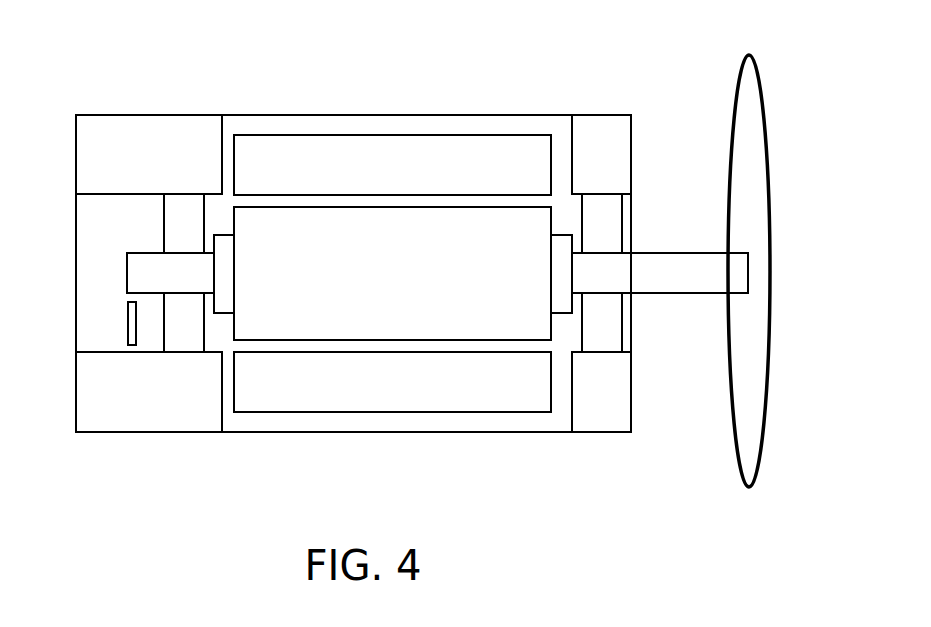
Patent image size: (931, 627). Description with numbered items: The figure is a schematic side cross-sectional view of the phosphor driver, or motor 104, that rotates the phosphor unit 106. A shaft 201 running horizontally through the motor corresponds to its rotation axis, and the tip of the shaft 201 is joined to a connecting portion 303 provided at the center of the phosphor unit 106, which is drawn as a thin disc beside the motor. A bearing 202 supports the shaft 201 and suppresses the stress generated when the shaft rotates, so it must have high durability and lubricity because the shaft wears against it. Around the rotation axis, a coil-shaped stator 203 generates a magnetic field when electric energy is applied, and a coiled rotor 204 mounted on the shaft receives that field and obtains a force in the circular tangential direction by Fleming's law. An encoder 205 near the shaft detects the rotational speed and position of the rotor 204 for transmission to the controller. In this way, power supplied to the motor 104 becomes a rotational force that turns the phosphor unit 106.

The phosphor driver (motor) 104 is at (605, 87).
The shaft 201 is at (705, 257).
The bearing 202 is at (598, 213).
The stator 203 is at (398, 150).
The rotor 204 is at (295, 253).
The encoder 205 is at (128, 315).
The connecting portion 303 is at (742, 298).
The phosphor unit 106 is at (742, 422).